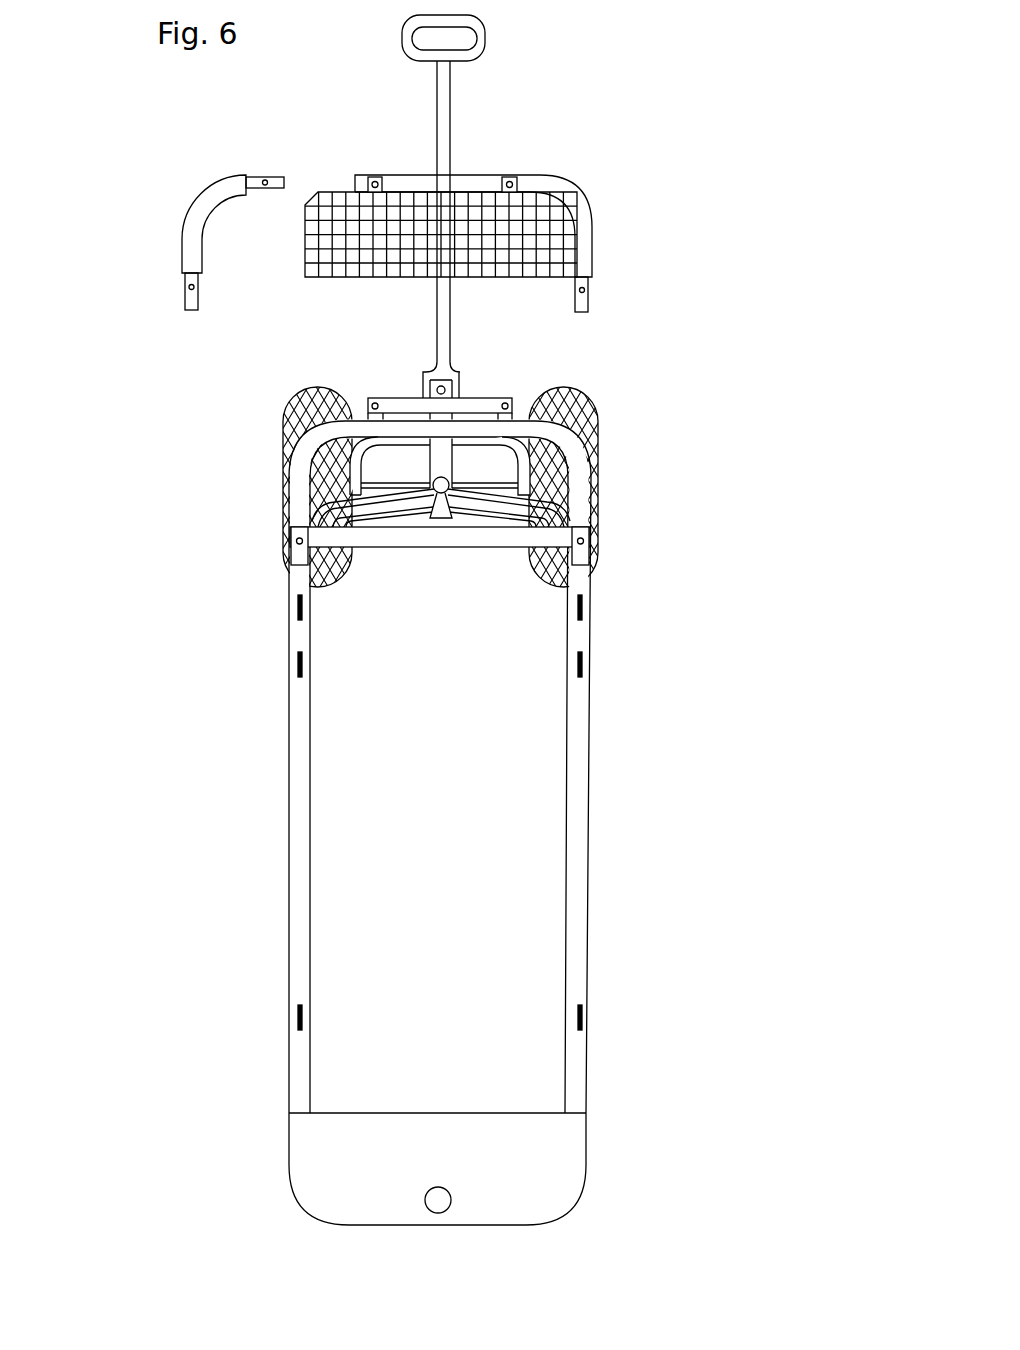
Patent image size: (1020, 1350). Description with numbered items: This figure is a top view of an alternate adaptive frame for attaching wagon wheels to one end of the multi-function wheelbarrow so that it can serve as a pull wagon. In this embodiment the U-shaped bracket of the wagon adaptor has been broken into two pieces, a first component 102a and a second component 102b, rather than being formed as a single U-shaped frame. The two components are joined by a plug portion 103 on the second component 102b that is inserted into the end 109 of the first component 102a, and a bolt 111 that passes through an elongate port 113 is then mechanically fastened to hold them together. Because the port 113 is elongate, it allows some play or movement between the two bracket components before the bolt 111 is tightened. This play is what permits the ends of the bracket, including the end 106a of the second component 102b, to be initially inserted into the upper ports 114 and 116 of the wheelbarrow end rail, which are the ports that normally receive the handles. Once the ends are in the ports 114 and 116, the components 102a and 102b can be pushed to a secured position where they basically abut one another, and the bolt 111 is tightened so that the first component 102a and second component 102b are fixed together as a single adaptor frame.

The first component 102a is at (560, 185).
The second component 102b is at (190, 185).
The plug portion 103 is at (263, 178).
The elongate port 113 is at (265, 188).
The end 106a is at (183, 297).
The end 109 is at (353, 183).
The bolt 111 is at (375, 183).
The upper port 116 is at (288, 533).
The upper port 114 is at (592, 531).